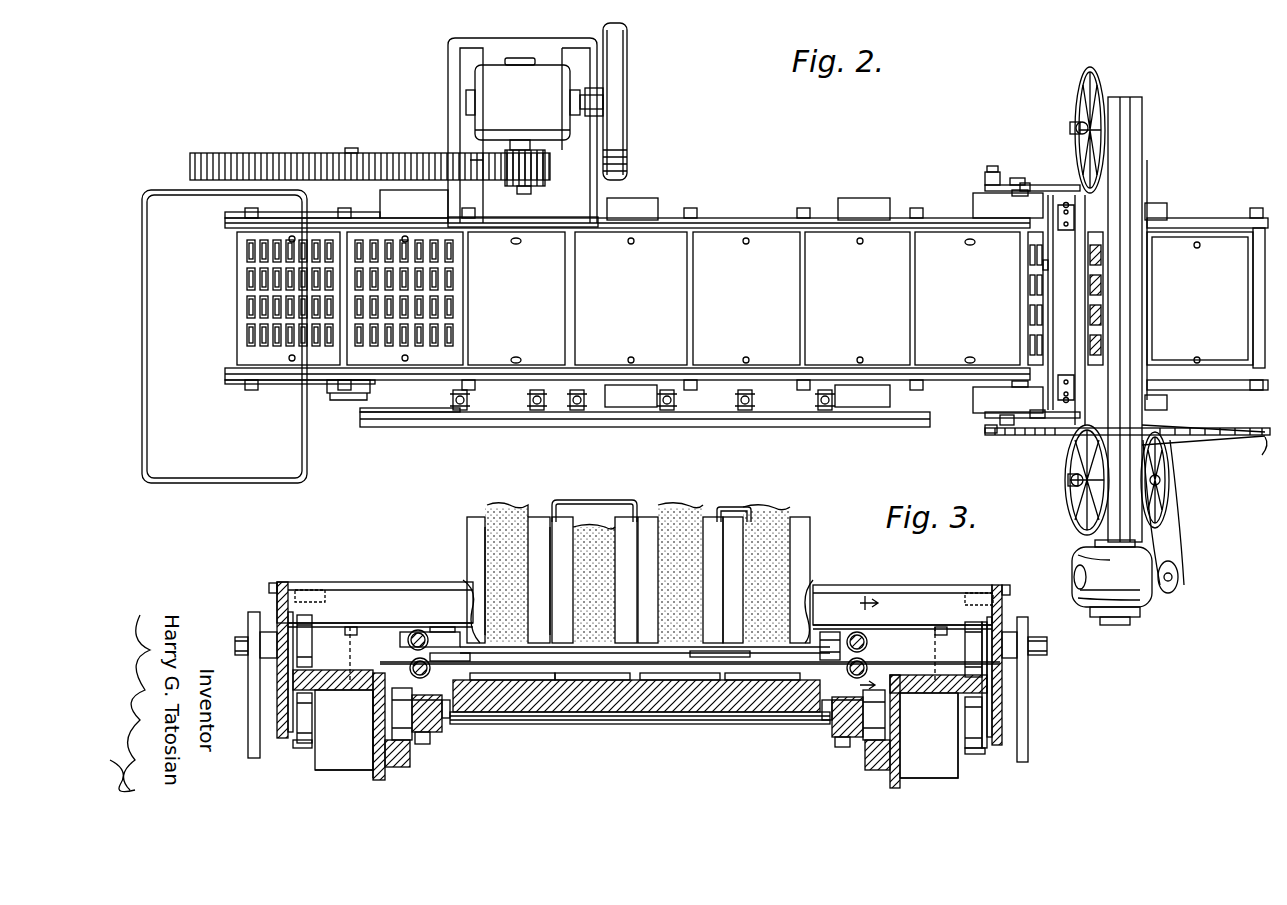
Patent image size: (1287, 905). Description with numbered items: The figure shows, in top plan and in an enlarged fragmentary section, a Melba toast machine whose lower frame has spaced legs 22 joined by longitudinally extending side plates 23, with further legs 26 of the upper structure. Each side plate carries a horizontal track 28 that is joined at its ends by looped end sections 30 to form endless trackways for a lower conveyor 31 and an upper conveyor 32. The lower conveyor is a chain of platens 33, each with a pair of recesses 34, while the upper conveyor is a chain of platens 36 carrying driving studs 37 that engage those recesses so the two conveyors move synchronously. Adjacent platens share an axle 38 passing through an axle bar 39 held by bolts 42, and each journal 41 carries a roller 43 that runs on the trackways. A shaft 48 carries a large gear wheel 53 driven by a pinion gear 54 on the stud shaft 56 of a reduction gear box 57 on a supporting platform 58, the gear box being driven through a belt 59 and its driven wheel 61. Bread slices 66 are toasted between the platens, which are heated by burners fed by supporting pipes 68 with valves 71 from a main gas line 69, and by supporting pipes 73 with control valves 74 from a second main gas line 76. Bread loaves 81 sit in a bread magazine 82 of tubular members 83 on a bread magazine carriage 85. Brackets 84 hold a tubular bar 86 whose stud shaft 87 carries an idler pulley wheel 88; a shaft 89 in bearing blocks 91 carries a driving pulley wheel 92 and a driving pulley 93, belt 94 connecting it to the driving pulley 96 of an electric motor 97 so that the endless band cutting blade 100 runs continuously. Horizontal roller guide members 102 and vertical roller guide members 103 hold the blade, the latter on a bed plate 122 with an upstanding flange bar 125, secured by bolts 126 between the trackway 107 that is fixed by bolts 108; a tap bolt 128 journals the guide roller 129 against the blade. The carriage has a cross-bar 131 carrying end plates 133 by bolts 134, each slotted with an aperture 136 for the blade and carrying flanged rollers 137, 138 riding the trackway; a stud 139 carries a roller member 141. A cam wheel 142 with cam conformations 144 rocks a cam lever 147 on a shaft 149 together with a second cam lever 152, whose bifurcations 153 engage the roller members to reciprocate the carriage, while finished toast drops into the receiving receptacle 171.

In FIG. 2, the uprights or legs 22 is at (437, 185).
In FIG. 3, the uprights or legs 22 is at (330, 765).
In FIG. 3, the side plates 23 is at (376, 780).
In FIG. 2, the uprights or legs 26 is at (640, 198).
In FIG. 2, the horizontal track 28 is at (268, 215).
In FIG. 3, the horizontal track 28 is at (405, 767).
In FIG. 2, the looped end sections 30 is at (490, 225).
In FIG. 2, the lower conveyor 31 is at (1265, 275).
In FIG. 2, the upper conveyor 32 is at (1009, 293).
In FIG. 2, the platens 33 is at (250, 357).
In FIG. 3, the platens 33 is at (660, 700).
In FIG. 2, the apertures or recesses 34 is at (292, 236).
In FIG. 2, the platens 36 is at (735, 235).
In FIG. 2, the driving studs 37 is at (515, 244).
In FIG. 3, the axle 38 is at (568, 724).
In FIG. 3, the axle bar 39 is at (442, 732).
In FIG. 3, the journals 41 is at (392, 715).
In FIG. 3, the bolts 42 is at (430, 744).
In FIG. 2, the roller 43 is at (243, 215).
In FIG. 3, the roller 43 is at (398, 722).
In FIG. 2, the shaft 48 is at (352, 148).
In FIG. 2, the gear wheel 53 is at (283, 153).
In FIG. 2, the pinion gear 54 is at (546, 172).
In FIG. 2, the stud shaft 56 is at (528, 194).
In FIG. 2, the reduction gear box 57 is at (534, 104).
In FIG. 2, the supporting platform 58 is at (448, 60).
In FIG. 2, the belt 59 is at (628, 57).
In FIG. 2, the driven wheel 61 is at (620, 160).
In FIG. 2, the bread slices 66 is at (1040, 300).
In FIG. 2, the supporting pipe 68 is at (466, 400).
In FIG. 2, the main high pressure gas line 69 is at (485, 420).
In FIG. 2, the valve 71 is at (460, 412).
In FIG. 2, the supporting pipe 73 is at (675, 402).
In FIG. 2, the control valve 74 is at (605, 400).
In FIG. 2, the main high pressure gas line 76 is at (720, 427).
In FIG. 2, the bread loaves 81 is at (1085, 240).
In FIG. 3, the bread loaves 81 is at (498, 517).
In FIG. 2, the bread magazine 82 is at (1090, 315).
In FIG. 3, the bread magazine 82 is at (456, 541).
In FIG. 3, the tubular members 83 is at (595, 506).
In FIG. 2, the angle iron supporting brackets 84 is at (1160, 203).
In FIG. 3, the bread magazine carriage 85 is at (877, 576).
In FIG. 2, the tubular bar 86 is at (1135, 275).
In FIG. 2, the stud shaft 87 is at (1072, 128).
In FIG. 2, the idler pulley wheel 88 is at (1077, 95).
In FIG. 2, the shaft 89 is at (1070, 482).
In FIG. 2, the bearing blocks 91 is at (1150, 480).
In FIG. 2, the driving pulley wheel 92 is at (1068, 530).
In FIG. 2, the driving pulley 93 is at (1180, 550).
In FIG. 2, the belt 94 is at (1172, 488).
In FIG. 2, the driving pulley 96 is at (1178, 582).
In FIG. 2, the electric motor 97 is at (1085, 610).
In FIG. 2, the endless band cutting blade 100 is at (1120, 150).
In FIG. 3, the horizontal roller guide members 102 is at (399, 645).
In FIG. 2, the vertical roller guide members 103 is at (1058, 215).
In FIG. 3, the vertical roller guide members 103 is at (447, 624).
In FIG. 2, the trackway 107 is at (973, 210).
In FIG. 3, the trackway 107 is at (330, 692).
In FIG. 3, the bolts 108 is at (640, 674).
In FIG. 3, the bed plate 122 is at (690, 660).
In FIG. 2, the upstanding flange bar 125 is at (1035, 420).
In FIG. 3, the upstanding flange bar 125 is at (385, 624).
In FIG. 2, the bolts 126 is at (1068, 203).
In FIG. 3, the bolts 126 is at (352, 627).
In FIG. 3, the tap bolt 128 is at (470, 662).
In FIG. 3, the guide roller 129 is at (463, 580).
In FIG. 3, the cross-bar 131 is at (910, 585).
In FIG. 3, the end plates 133 is at (1000, 710).
In FIG. 3, the bolts 134 is at (267, 582).
In FIG. 3, the aperture 136 is at (285, 635).
In FIG. 2, the flanged roller 137 is at (1000, 298).
In FIG. 3, the flanged roller 137 is at (310, 618).
In FIG. 3, the flanged roller 138 is at (303, 748).
In FIG. 3, the stud 139 is at (236, 645).
In FIG. 2, the roller member 141 is at (1015, 178).
In FIG. 3, the roller member 141 is at (268, 632).
In FIG. 2, the cam wheel 142 is at (1225, 440).
In FIG. 2, the cam conformations 144 is at (1262, 440).
In FIG. 2, the cam lever 147 is at (985, 430).
In FIG. 3, the cam lever 147 is at (250, 758).
In FIG. 2, the shaft 149 is at (985, 192).
In FIG. 2, the cam lever 152 is at (990, 172).
In FIG. 3, the cam lever 152 is at (1028, 755).
In FIG. 2, the bifurcations 153 is at (1025, 183).
In FIG. 2, the receiving receptacle 171 is at (308, 478).